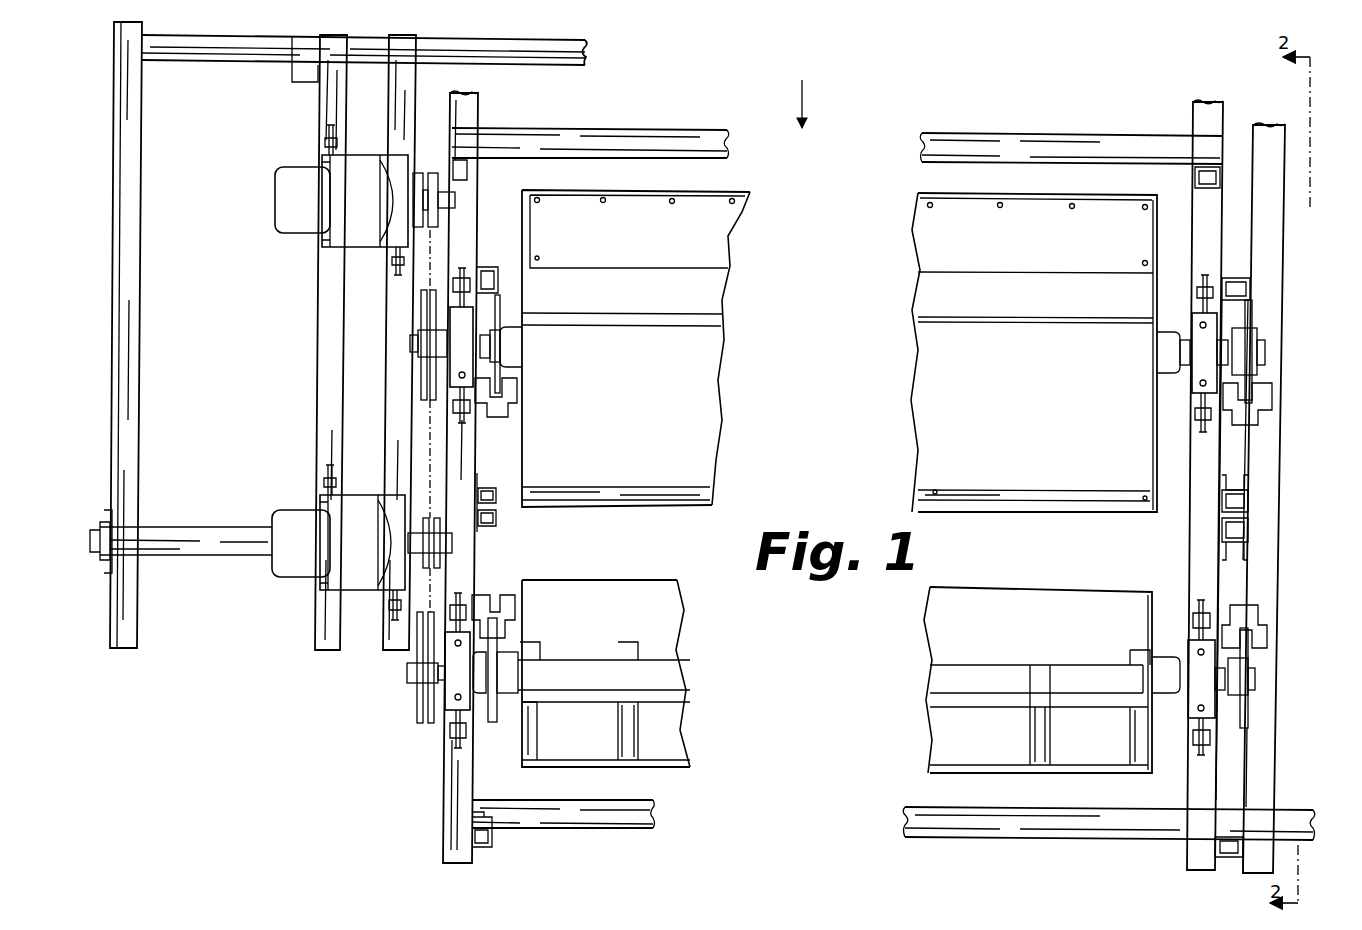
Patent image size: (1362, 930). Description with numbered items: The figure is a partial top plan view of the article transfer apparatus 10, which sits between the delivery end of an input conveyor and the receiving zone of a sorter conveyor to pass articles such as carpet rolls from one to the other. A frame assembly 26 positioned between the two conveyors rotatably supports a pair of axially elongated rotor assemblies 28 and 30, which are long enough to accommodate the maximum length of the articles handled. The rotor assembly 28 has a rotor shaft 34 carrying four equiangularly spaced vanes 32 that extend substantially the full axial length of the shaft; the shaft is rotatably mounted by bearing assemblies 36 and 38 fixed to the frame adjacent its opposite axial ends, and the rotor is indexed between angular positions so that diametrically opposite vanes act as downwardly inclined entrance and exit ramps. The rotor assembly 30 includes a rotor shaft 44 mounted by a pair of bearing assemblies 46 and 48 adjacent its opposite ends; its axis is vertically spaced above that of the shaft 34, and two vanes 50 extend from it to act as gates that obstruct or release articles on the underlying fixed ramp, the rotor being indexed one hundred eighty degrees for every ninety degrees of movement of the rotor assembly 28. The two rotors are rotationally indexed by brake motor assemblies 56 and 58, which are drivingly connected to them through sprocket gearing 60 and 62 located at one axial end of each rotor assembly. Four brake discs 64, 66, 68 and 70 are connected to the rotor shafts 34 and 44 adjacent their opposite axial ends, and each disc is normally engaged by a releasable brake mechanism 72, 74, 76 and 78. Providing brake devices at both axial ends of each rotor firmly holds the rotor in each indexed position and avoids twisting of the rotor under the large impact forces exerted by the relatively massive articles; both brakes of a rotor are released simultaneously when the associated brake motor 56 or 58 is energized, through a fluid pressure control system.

The article transfer apparatus 10 is at (1330, 170).
The frame assembly 26 is at (598, 127).
The rotor assembly 28 is at (925, 182).
The rotor assembly 30 is at (645, 768).
The vanes 32 is at (660, 470).
The rotor shaft 34 is at (490, 342).
The bearing assembly 36 is at (1195, 335).
The bearing assembly 38 is at (458, 318).
The rotor shaft 44 is at (1255, 680).
The bearing assembly 46 is at (1201, 710).
The bearing assembly 48 is at (458, 697).
The vanes 50 is at (655, 590).
The brake motor assembly 56 is at (285, 165).
The brake motor assembly 58 is at (290, 530).
The sprocket gearing 60 is at (427, 277).
The sprocket gearing 62 is at (430, 518).
The brake disc 64 is at (500, 302).
The brake disc 66 is at (1252, 315).
The brake disc 68 is at (490, 628).
The brake disc 70 is at (1265, 625).
The releasable brake mechanism 72 is at (497, 405).
The releasable brake mechanism 74 is at (1272, 393).
The releasable brake mechanism 76 is at (510, 625).
The releasable brake mechanism 78 is at (1250, 640).